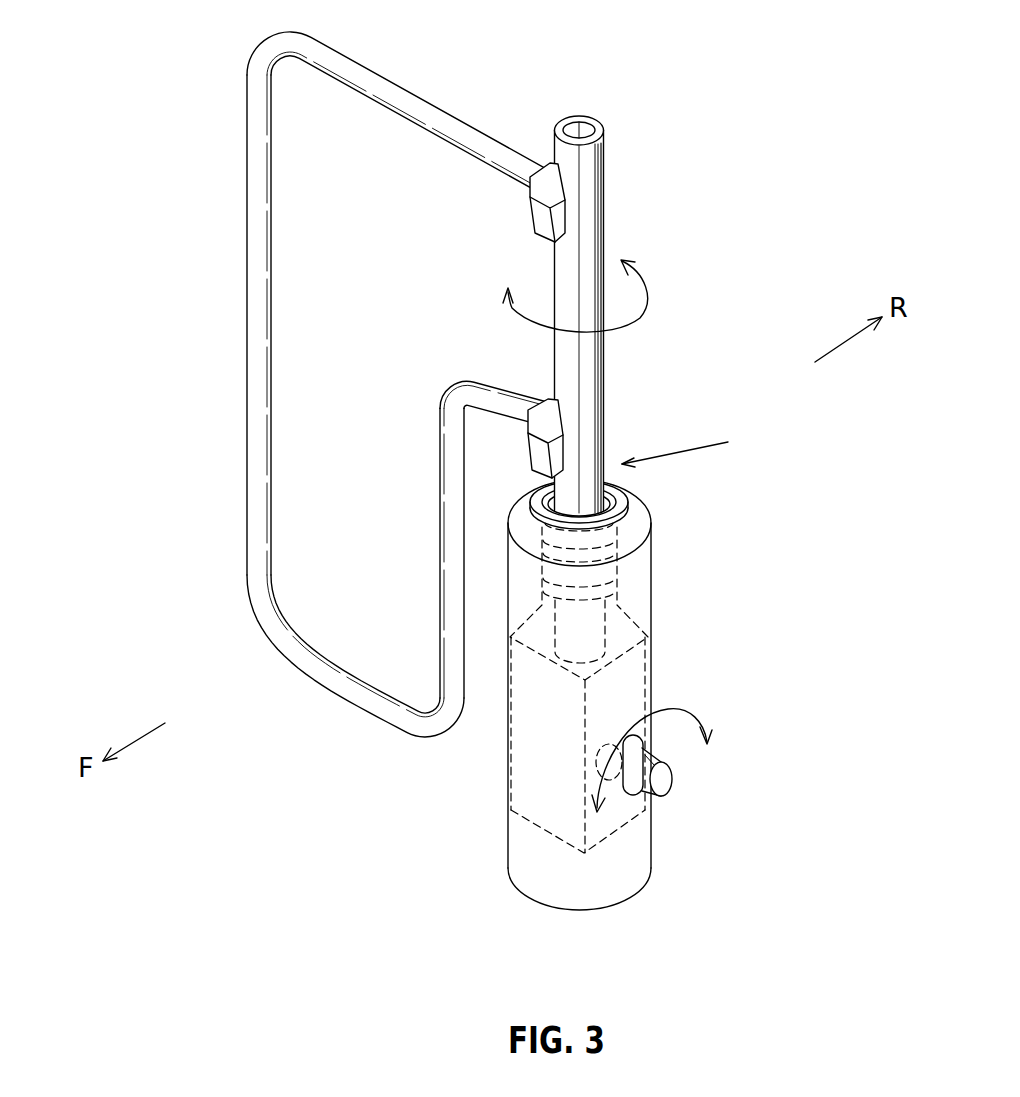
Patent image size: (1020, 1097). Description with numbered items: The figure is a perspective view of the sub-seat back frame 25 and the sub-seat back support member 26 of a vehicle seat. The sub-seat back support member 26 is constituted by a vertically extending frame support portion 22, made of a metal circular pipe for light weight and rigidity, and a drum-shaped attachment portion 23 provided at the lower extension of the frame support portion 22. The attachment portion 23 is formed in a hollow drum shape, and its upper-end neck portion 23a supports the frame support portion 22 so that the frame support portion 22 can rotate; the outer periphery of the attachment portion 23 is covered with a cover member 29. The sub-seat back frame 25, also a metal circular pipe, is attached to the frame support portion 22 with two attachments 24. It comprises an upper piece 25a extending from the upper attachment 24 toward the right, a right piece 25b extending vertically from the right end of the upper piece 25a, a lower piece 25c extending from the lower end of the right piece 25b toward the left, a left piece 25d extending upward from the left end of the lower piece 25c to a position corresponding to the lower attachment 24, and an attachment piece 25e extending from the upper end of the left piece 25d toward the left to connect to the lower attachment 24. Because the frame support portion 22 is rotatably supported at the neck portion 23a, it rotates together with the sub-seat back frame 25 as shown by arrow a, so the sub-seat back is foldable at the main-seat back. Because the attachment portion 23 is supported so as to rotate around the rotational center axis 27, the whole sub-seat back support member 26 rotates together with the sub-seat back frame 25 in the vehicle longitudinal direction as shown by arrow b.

The sub-seat back frame support portion 22 is at (607, 400).
The attachment portion 23 is at (592, 695).
The upper-end neck portion 23a is at (638, 521).
The attachment 24 is at (528, 207).
The sub-seat back frame 25 is at (360, 396).
The upper piece 25a is at (402, 86).
The right piece 25b is at (246, 478).
The lower piece 25c is at (331, 692).
The left piece 25d is at (440, 525).
The attachment piece 25e is at (511, 391).
The sub-seat back support member 26 is at (693, 445).
The rotational center axis 27 is at (673, 788).
The cover member 29 is at (507, 797).
The arrow a is at (648, 283).
The arrow b is at (688, 705).